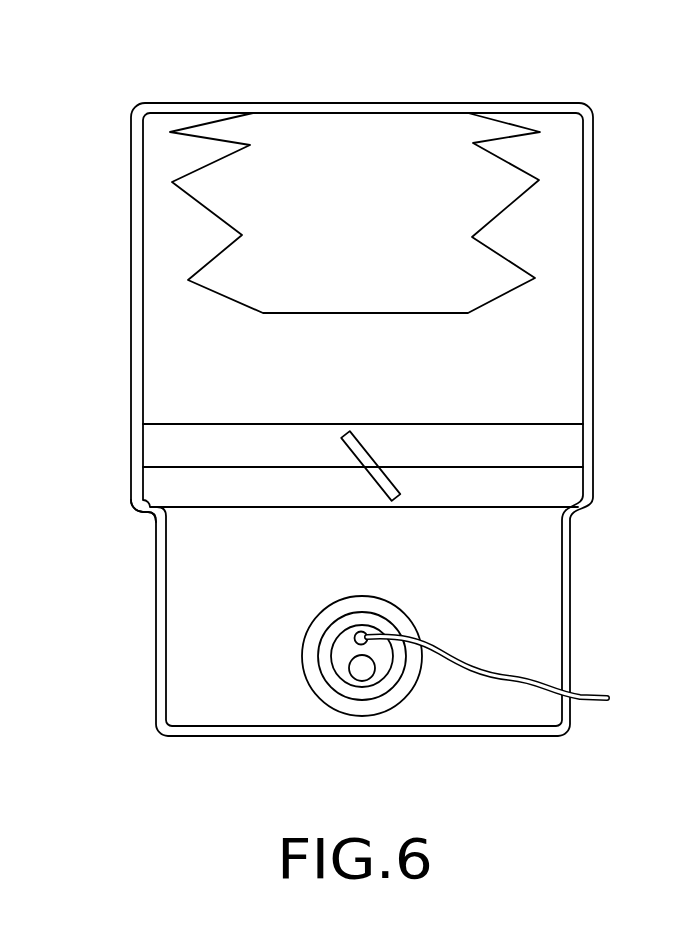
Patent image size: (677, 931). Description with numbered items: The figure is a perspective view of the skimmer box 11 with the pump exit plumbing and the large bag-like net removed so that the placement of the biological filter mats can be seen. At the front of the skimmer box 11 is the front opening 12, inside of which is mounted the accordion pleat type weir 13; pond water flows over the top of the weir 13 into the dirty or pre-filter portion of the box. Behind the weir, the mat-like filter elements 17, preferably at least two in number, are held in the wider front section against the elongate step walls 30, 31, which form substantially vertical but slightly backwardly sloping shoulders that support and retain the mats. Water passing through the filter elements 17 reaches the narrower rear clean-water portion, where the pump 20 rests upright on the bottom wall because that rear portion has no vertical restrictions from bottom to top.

The skimmer box 11 is at (126, 186).
The front opening 12 is at (350, 113).
The accordion pleat type weir 13 is at (204, 160).
The mat-like filter elements 17 is at (153, 446).
The pump 20 is at (418, 633).
The step wall 30 is at (573, 508).
The step wall 31 is at (140, 520).